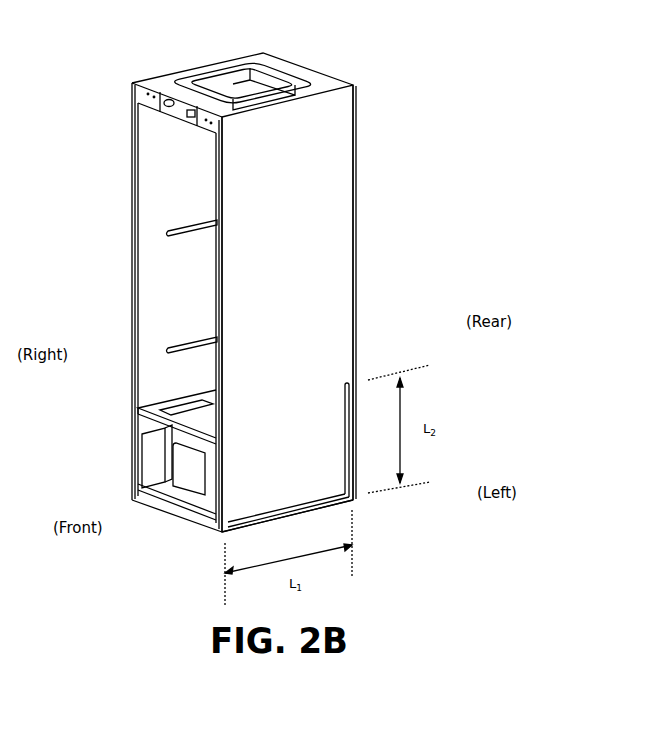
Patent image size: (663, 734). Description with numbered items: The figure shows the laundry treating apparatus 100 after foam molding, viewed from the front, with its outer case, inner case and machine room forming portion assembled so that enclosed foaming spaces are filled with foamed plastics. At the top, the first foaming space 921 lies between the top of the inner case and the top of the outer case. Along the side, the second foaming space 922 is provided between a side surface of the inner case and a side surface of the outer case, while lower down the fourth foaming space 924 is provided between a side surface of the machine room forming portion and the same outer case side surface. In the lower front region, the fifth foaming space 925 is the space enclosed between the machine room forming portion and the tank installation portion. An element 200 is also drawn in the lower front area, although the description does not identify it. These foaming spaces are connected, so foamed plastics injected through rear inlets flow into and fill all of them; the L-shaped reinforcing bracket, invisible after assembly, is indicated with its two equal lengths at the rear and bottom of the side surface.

The laundry treating apparatus 100 is at (100, 37).
The first foaming space 921 is at (313, 80).
The second foaming space 922 is at (286, 233).
The fourth foaming space 924 is at (278, 446).
The fifth foaming space 925 is at (143, 445).
The component unit 200 is at (193, 458).